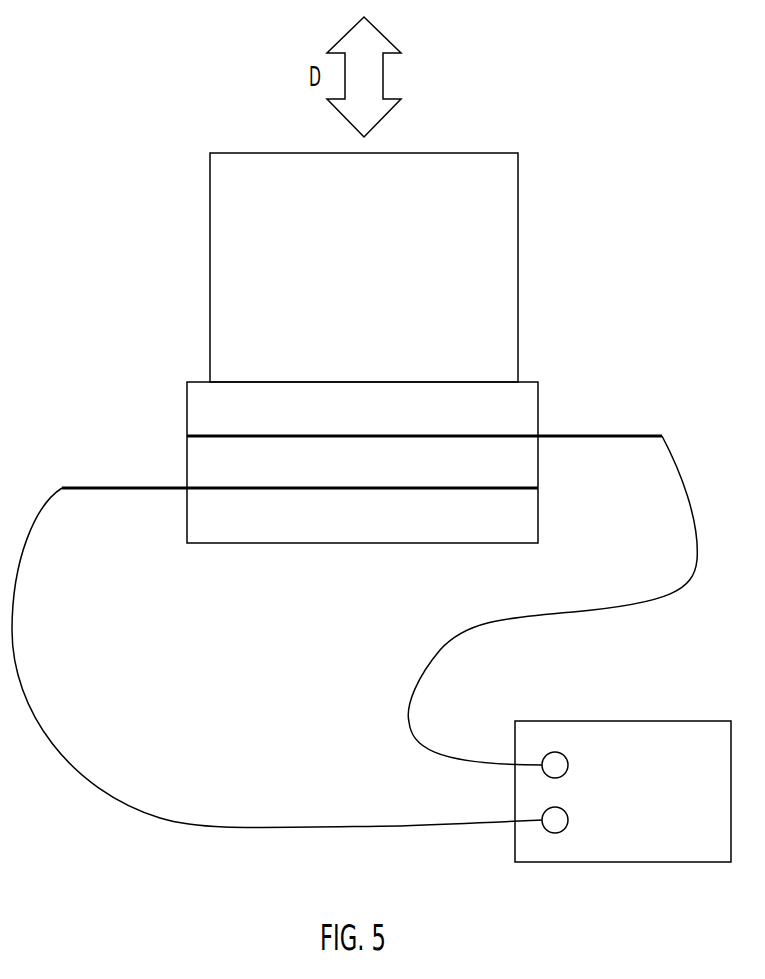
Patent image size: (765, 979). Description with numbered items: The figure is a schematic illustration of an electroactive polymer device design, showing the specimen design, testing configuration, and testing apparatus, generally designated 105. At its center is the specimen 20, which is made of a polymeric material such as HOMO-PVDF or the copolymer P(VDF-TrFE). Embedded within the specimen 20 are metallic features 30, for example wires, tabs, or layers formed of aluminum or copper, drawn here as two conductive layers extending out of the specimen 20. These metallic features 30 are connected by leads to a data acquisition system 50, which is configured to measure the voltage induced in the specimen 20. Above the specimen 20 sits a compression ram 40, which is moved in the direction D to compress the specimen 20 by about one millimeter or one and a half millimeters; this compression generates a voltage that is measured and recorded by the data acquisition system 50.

The testing apparatus 105 is at (136, 54).
The compression ram 40 is at (210, 212).
The specimen 20 is at (538, 517).
The metallic features 30 is at (146, 485).
The data acquisition system 50 is at (633, 862).